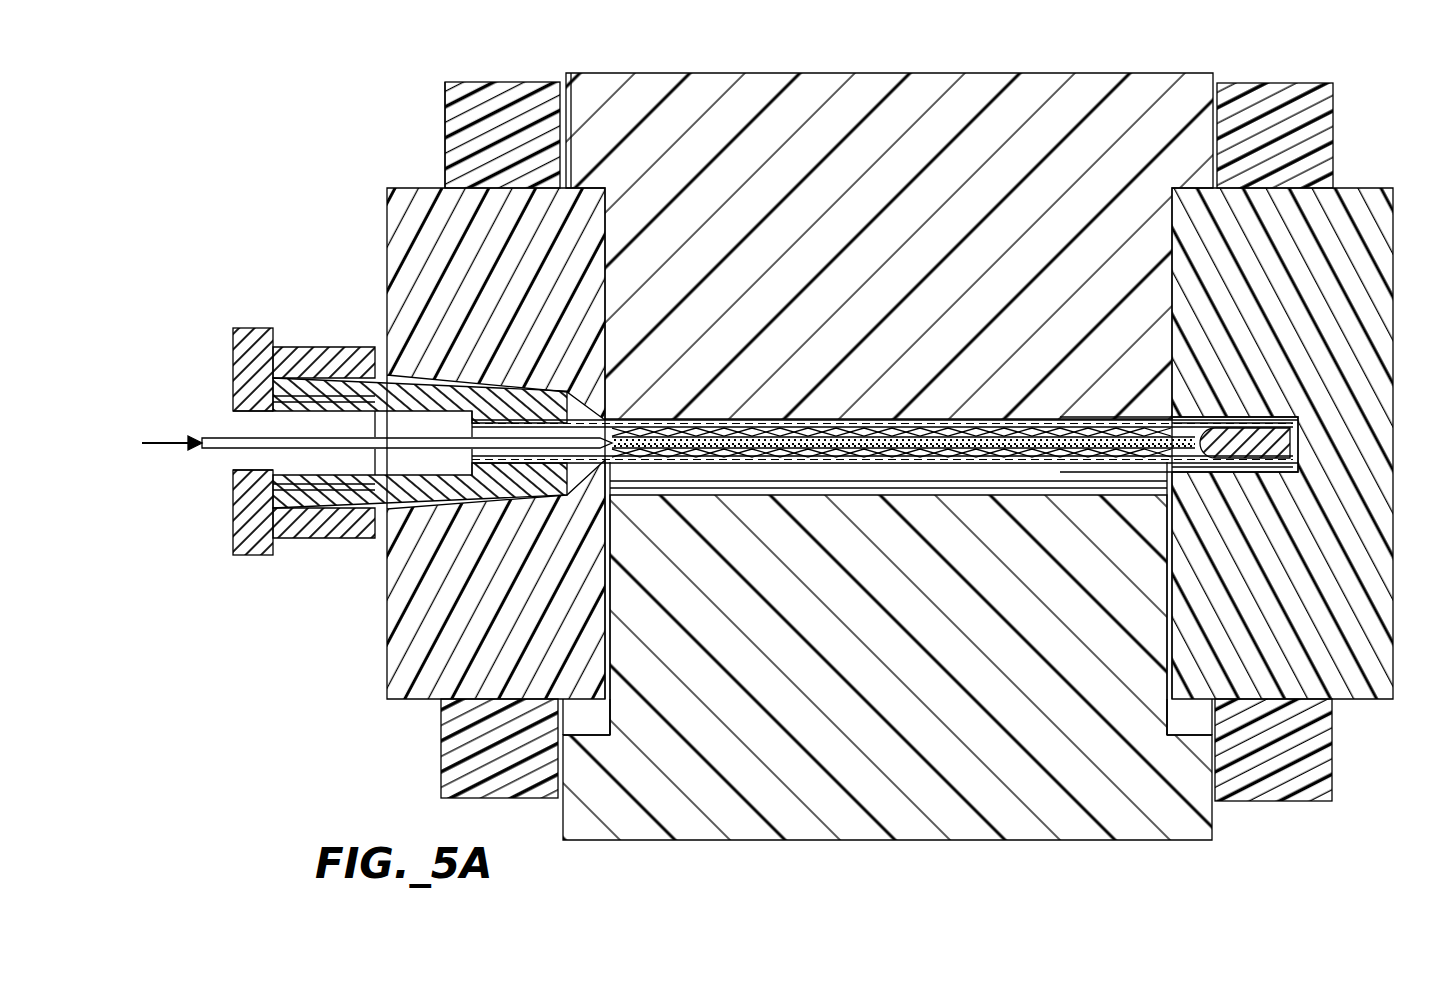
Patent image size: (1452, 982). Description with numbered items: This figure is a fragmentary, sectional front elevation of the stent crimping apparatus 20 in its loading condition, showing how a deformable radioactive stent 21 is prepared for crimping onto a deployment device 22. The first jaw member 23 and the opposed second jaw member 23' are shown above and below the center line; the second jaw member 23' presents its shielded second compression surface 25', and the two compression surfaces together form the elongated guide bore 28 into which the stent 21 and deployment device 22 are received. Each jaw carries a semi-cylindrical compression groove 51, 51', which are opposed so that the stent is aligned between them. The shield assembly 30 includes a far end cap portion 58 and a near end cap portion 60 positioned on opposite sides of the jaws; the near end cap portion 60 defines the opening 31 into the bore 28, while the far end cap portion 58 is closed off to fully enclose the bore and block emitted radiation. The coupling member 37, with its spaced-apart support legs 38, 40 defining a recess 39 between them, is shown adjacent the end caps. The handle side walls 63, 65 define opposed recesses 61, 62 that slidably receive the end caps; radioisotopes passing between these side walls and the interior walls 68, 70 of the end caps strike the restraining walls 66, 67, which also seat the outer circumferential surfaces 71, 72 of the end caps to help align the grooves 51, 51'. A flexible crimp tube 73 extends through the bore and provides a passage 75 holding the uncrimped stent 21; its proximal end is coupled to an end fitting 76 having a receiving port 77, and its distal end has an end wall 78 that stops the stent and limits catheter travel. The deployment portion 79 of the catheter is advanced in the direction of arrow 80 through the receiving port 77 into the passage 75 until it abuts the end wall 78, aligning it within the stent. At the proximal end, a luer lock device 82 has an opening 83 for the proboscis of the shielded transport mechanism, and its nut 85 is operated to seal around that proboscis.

The stent crimping apparatus 20 is at (1307, 367).
The deformable radioactive stent 21 is at (1048, 455).
The deployment device 22 is at (368, 465).
The first jaw member 23 is at (889, 231).
The second jaw member 23' is at (887, 686).
The second compression surface 25' is at (885, 472).
The guide bore 28 is at (752, 470).
The shield assembly 30 is at (889, 231).
The opening 31 is at (428, 472).
The coupling member 37 is at (508, 80).
The support leg 38 is at (445, 135).
The recess 39 is at (568, 95).
The support leg 40 is at (1335, 125).
The compression groove 51 is at (891, 421).
The compression groove 51' is at (888, 510).
The far end cap portion 58 is at (1393, 245).
The near end cap portion 60 is at (387, 218).
The recess 61 is at (1183, 722).
The recess 62 is at (596, 720).
The side wall 63 is at (1176, 600).
The side wall 65 is at (602, 600).
The restraining wall 66 is at (1213, 723).
The restraining wall 67 is at (560, 730).
The interior wall 68 is at (1170, 572).
The interior wall 70 is at (607, 572).
The outer circumferential surface 71 is at (1192, 703).
The outer circumferential surface 72 is at (592, 720).
The crimp tube 73 is at (1296, 433).
The passage 75 is at (1133, 470).
The end fitting 76 is at (345, 345).
The receiving port 77 is at (392, 480).
The end wall 78 is at (1203, 443).
The deployment portion 79 is at (612, 422).
The arrow 80 is at (148, 440).
The luer lock device 82 is at (330, 540).
The opening 83 is at (240, 465).
The nut 85 is at (233, 510).